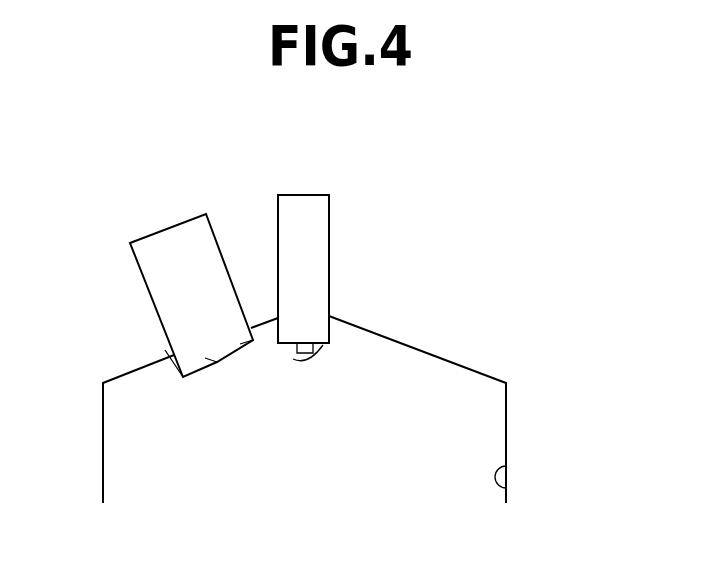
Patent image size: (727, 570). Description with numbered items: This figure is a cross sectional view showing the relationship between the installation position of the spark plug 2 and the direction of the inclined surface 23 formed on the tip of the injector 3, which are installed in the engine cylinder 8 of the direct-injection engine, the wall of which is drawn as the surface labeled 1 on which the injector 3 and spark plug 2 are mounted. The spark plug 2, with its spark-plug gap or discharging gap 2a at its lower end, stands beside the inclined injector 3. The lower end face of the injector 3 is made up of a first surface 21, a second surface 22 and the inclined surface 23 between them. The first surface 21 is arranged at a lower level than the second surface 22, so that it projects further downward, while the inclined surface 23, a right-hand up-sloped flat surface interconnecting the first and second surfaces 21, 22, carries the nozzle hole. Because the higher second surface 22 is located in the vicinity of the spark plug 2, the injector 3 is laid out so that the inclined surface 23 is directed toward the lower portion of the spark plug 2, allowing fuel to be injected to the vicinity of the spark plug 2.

The piston 1 is at (470, 427).
The engine cylinder 8 is at (505, 487).
The spark plug 2 is at (317, 222).
The spark-plug gap 2a is at (300, 360).
The injector 3 is at (186, 243).
The first surface 21 is at (195, 375).
The second surface 22 is at (243, 345).
The inclined surface 23 is at (218, 363).